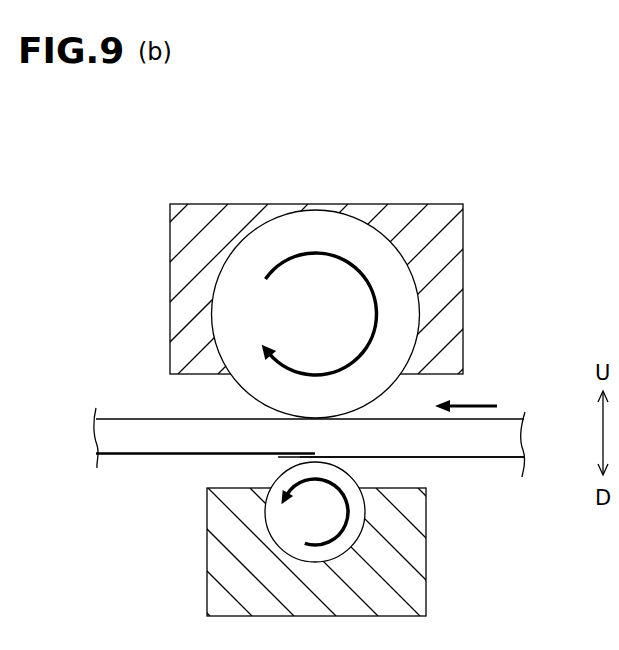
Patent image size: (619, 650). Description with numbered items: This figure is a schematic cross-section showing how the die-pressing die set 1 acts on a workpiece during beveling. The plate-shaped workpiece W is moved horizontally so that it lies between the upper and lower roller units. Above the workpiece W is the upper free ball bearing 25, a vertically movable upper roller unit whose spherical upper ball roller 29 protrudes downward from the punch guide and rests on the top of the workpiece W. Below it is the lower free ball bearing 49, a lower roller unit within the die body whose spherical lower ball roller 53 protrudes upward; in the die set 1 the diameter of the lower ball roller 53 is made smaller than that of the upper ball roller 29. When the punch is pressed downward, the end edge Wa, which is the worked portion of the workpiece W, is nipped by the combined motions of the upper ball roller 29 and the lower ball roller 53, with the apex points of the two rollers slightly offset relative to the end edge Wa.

The die-pressing die set 1 is at (449, 190).
The upper free ball bearing 25 is at (467, 272).
The upper ball roller 29 is at (252, 393).
The lower free ball bearing 49 is at (429, 568).
The lower ball roller 53 is at (277, 478).
The workpiece W is at (126, 419).
The end edge Wa is at (465, 454).